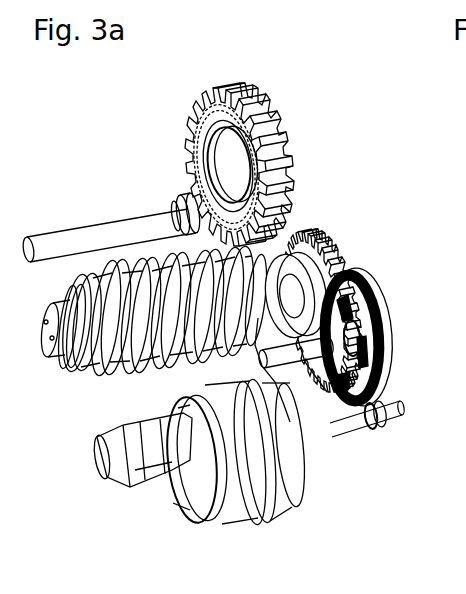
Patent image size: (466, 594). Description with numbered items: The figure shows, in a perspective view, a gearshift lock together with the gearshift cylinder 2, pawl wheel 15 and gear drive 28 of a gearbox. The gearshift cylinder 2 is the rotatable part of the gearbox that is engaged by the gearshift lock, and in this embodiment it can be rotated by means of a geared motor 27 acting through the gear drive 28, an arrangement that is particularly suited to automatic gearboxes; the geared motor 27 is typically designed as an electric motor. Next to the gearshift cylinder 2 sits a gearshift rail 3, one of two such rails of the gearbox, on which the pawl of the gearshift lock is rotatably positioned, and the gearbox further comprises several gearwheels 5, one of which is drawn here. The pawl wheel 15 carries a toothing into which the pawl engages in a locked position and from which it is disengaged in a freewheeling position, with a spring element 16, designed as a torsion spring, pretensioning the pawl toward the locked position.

The gearshift cylinder 2 is at (69, 410).
The gearshift rail 3 is at (66, 240).
The gearwheel 5 is at (294, 158).
The pawl wheel 15 is at (273, 122).
The spring element 16 is at (168, 187).
The geared motor 27 is at (230, 493).
The gear drive 28 is at (363, 265).